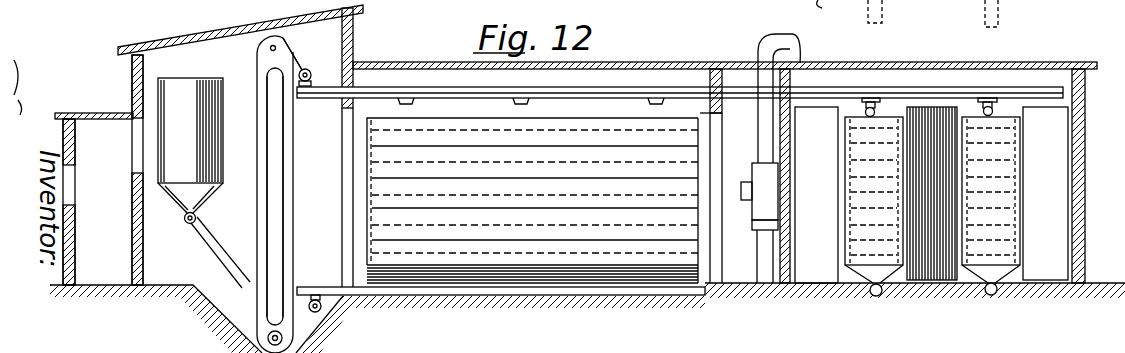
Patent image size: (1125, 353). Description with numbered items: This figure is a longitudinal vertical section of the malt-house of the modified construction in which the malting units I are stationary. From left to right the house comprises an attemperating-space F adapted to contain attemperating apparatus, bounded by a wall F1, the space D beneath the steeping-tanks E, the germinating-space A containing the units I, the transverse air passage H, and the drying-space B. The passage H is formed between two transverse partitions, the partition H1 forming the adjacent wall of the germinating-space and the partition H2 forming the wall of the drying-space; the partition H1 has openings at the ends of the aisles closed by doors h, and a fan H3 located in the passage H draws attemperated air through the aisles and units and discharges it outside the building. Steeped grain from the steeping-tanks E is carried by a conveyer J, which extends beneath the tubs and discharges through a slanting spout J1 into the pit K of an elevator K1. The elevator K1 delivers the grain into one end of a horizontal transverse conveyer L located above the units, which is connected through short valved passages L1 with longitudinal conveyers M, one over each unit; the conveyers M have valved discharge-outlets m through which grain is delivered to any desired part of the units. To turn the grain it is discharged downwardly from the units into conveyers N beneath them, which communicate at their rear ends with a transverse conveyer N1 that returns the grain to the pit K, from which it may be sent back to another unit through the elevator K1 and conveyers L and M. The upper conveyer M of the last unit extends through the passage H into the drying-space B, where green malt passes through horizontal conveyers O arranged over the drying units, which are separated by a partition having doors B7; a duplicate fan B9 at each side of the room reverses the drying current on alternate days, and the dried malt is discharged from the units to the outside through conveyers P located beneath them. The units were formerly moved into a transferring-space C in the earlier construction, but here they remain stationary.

The germinating-space A is at (587, 78).
The drying-space B is at (840, 83).
The doors B7 is at (931, 195).
The duplicate fan B9 is at (907, 13).
The transferring-space C is at (305, 176).
The space beneath the steeping-tanks D is at (185, 25).
The steeping-tanks E is at (190, 147).
The attemperating-space F is at (118, 25).
The shed wall F1 is at (98, 168).
The transverse passage H is at (750, 265).
The partition H1 is at (693, 83).
The partition H2 is at (781, 157).
The fan H3 is at (758, 192).
The doors h is at (718, 142).
The units I is at (542, 122).
The conveyer J is at (184, 219).
The slanting spout J1 is at (214, 236).
The pit K is at (252, 321).
The elevator K1 is at (322, 155).
The horizontal transverse conveyer L is at (326, 48).
The short valved passages L1 is at (320, 82).
The conveyers M is at (428, 90).
The valved discharge-outlets m is at (417, 102).
The conveyers N is at (478, 285).
The transverse conveyer N1 is at (308, 318).
The horizontal conveyers O is at (866, 110).
The conveyers P is at (873, 297).